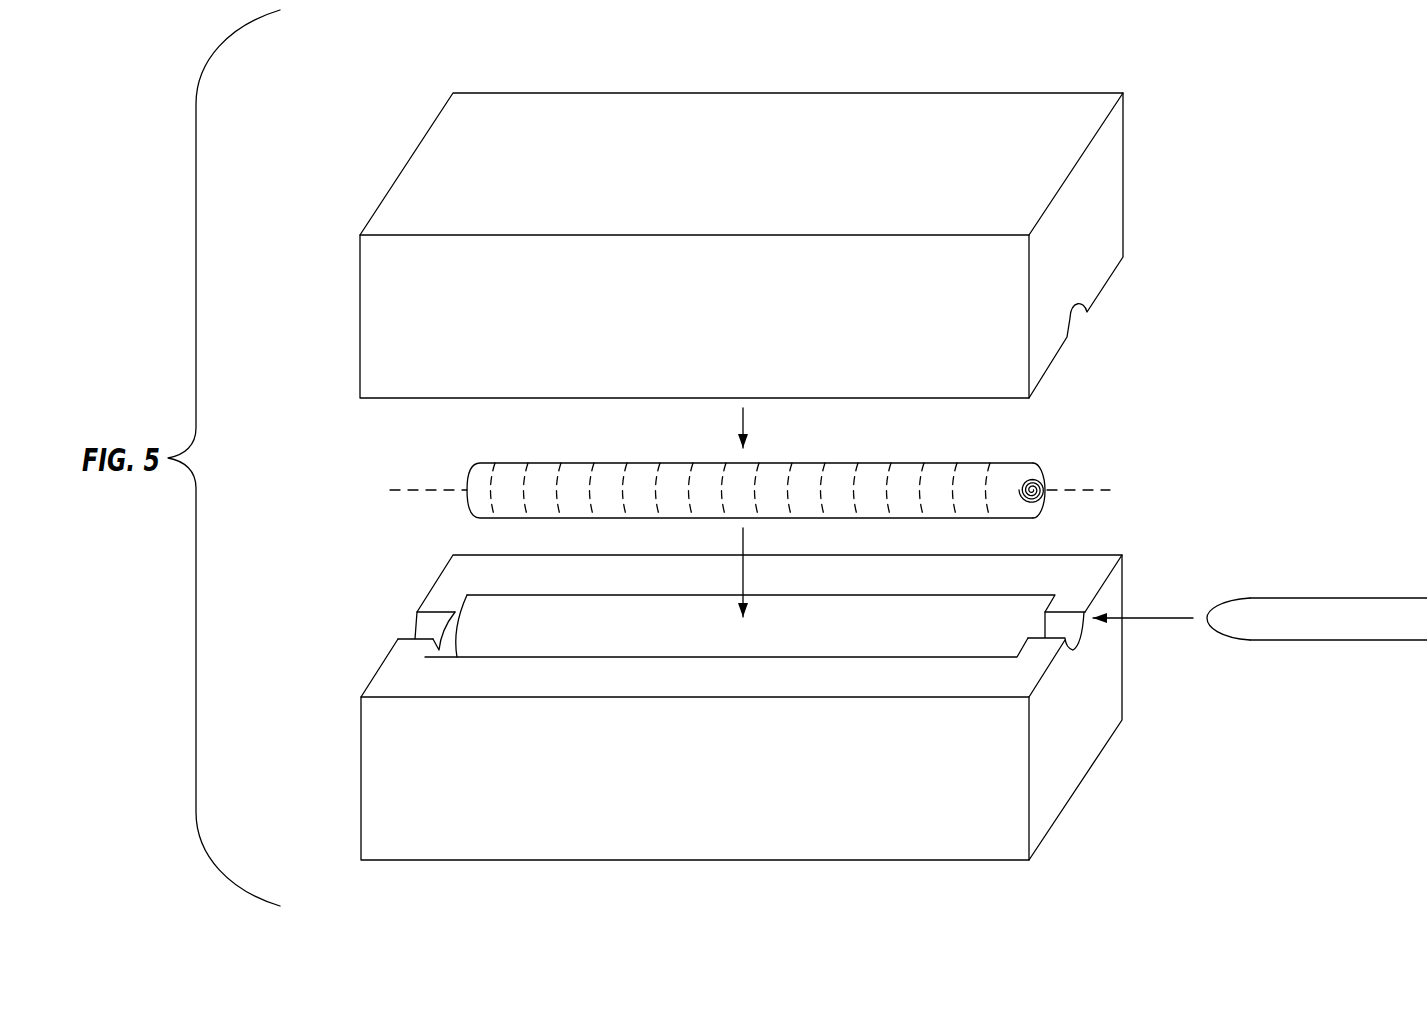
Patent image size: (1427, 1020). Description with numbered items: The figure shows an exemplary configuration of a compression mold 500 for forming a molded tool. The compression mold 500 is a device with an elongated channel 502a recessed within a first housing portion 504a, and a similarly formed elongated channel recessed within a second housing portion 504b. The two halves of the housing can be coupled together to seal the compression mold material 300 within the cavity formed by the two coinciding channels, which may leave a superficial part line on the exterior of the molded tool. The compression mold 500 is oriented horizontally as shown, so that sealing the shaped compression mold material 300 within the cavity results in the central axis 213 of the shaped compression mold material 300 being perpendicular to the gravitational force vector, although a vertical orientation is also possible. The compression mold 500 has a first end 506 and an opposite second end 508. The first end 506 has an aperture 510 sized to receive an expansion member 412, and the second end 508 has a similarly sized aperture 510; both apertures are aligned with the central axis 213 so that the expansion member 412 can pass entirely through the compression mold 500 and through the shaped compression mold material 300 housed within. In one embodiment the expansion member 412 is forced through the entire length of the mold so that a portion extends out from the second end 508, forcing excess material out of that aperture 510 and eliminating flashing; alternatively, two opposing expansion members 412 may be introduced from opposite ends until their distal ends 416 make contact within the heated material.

The compression mold 500 is at (386, 120).
The second housing portion 504b is at (1113, 215).
The first housing portion 504a is at (1112, 587).
The compression mold material 300 is at (813, 480).
The central axis 213 is at (410, 488).
The elongated channel 502a is at (990, 628).
The aperture 510 is at (403, 627).
The second end 508 is at (357, 779).
The first end 506 is at (1143, 721).
The expansion member 412 is at (1325, 617).
The distal end 416 is at (1215, 600).